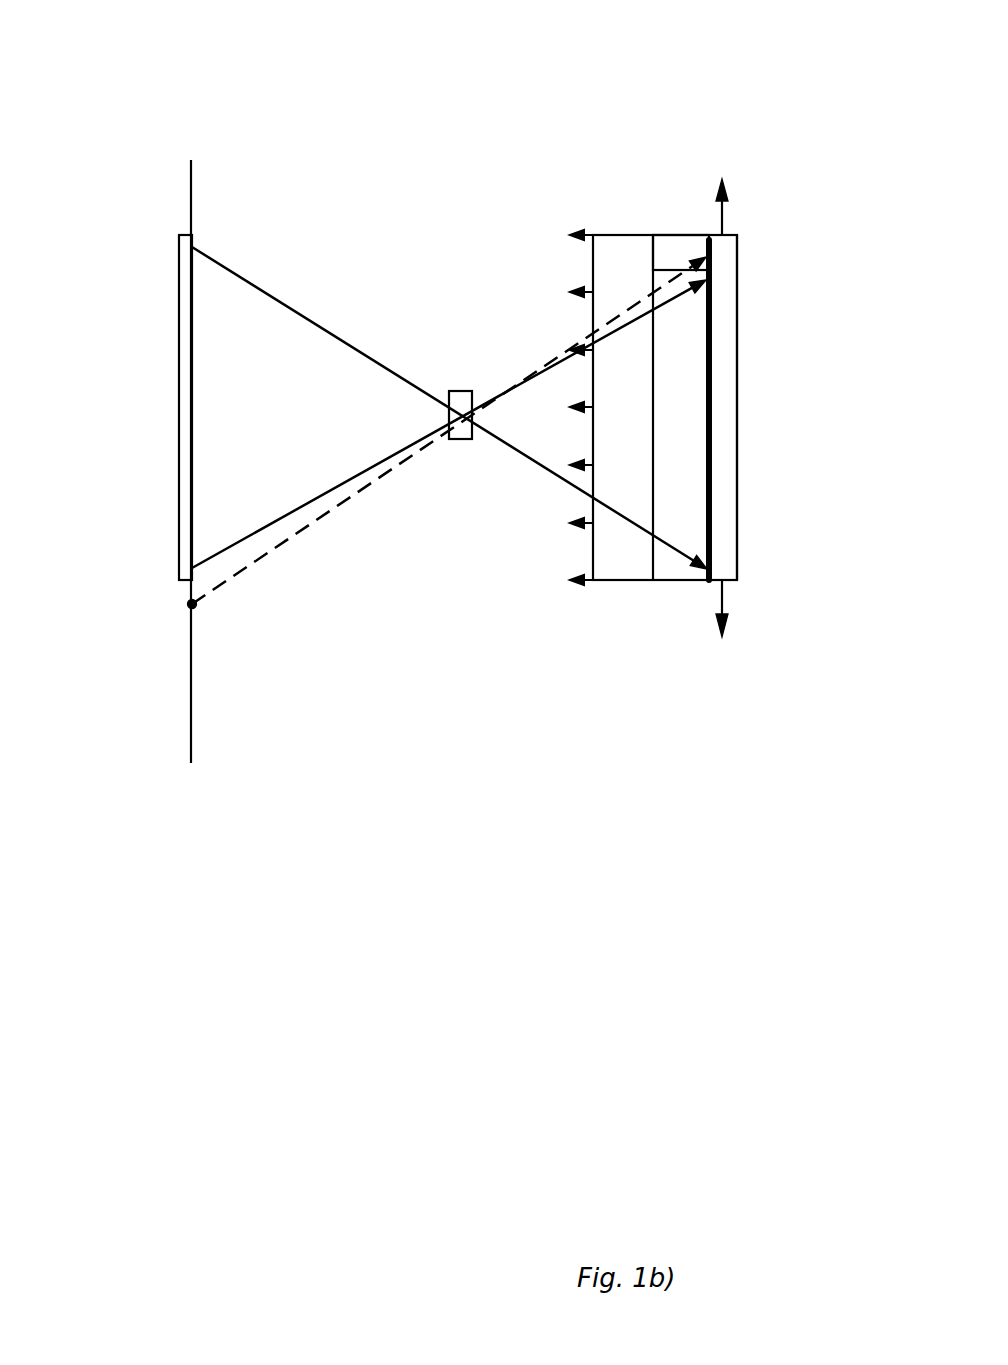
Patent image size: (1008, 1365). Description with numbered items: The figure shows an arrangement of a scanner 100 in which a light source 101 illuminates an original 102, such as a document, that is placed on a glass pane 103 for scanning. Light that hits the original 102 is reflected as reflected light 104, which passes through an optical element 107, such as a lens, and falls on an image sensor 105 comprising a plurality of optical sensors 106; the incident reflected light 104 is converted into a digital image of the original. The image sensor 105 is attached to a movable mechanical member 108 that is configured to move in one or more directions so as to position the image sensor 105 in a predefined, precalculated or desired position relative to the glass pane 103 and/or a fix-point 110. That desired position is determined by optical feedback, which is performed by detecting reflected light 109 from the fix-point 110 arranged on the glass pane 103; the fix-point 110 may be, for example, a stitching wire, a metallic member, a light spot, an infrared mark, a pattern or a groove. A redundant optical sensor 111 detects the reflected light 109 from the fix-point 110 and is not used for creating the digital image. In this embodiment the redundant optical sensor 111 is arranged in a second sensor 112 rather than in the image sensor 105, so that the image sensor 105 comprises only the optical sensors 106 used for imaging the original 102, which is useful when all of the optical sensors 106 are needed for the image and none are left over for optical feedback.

The scanner 100 is at (499, 1105).
The light source 101 is at (653, 506).
The original 102 is at (171, 655).
The glass pane 103 is at (264, 384).
The reflected light 104 is at (248, 537).
The image sensor 105 is at (760, 407).
The optical sensors 106 is at (800, 410).
The optical element 107 is at (583, 726).
The movable mechanical member 108 is at (771, 408).
The reflected light from the fix-point 109 is at (449, 468).
The fix-point 110 is at (262, 771).
The redundant optical sensor 111 is at (801, 396).
The second sensor 112 is at (638, 183).